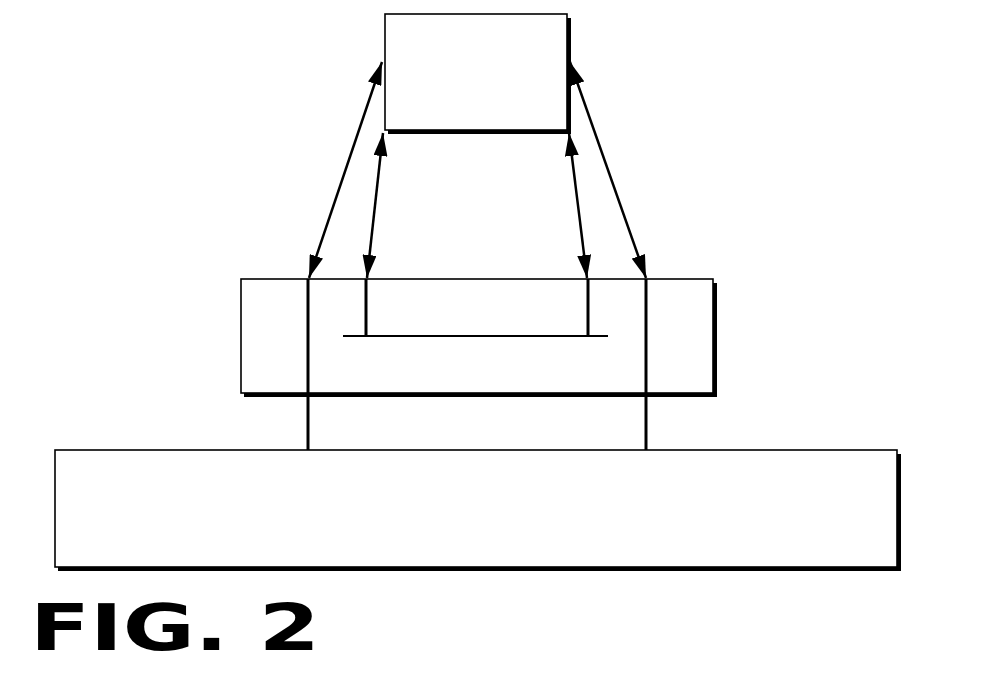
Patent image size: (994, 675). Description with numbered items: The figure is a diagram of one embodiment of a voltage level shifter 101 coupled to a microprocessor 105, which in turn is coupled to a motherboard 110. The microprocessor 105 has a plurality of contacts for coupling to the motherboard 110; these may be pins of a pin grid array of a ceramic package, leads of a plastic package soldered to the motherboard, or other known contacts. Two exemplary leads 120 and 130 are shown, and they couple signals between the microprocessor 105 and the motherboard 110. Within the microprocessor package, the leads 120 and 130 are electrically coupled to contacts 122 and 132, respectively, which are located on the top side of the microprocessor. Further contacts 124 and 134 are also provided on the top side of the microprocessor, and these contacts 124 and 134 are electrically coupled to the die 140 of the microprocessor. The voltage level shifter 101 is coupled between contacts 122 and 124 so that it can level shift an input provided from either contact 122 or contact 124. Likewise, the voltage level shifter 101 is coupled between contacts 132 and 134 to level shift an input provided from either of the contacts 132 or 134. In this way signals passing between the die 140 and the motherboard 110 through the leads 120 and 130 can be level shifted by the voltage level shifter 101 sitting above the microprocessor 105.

The voltage level shifter 101 is at (558, 120).
The microprocessor 105 is at (458, 331).
The motherboard 110 is at (890, 564).
The lead 120 is at (305, 441).
The contact 122 is at (305, 277).
The contact 124 is at (368, 277).
The lead 130 is at (649, 443).
The contact 132 is at (648, 277).
The contact 134 is at (586, 277).
The die 140 is at (505, 338).